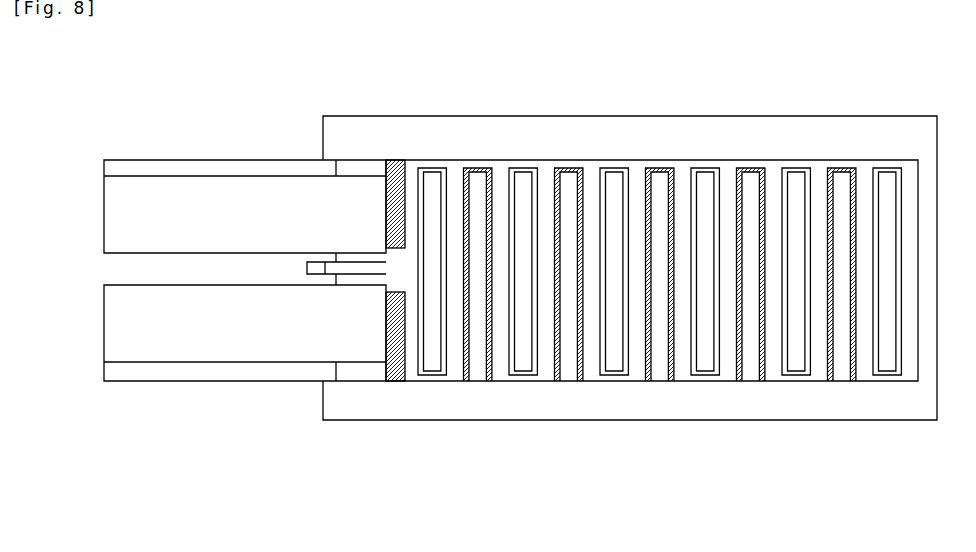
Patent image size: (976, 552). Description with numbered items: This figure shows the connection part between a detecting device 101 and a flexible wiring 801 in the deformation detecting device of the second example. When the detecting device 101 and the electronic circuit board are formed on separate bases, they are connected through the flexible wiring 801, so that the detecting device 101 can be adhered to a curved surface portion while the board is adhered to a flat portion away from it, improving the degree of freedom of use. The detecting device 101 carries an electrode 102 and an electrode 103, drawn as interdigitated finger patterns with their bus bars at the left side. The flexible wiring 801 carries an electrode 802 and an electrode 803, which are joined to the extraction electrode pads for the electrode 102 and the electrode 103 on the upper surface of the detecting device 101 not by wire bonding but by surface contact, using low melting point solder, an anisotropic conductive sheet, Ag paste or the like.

The detecting device 101 is at (656, 115).
The electrode 102 is at (395, 193).
The electrode 103 is at (395, 355).
The flexible wiring 801 is at (124, 274).
The electrode 802 is at (187, 193).
The electrode 803 is at (188, 348).